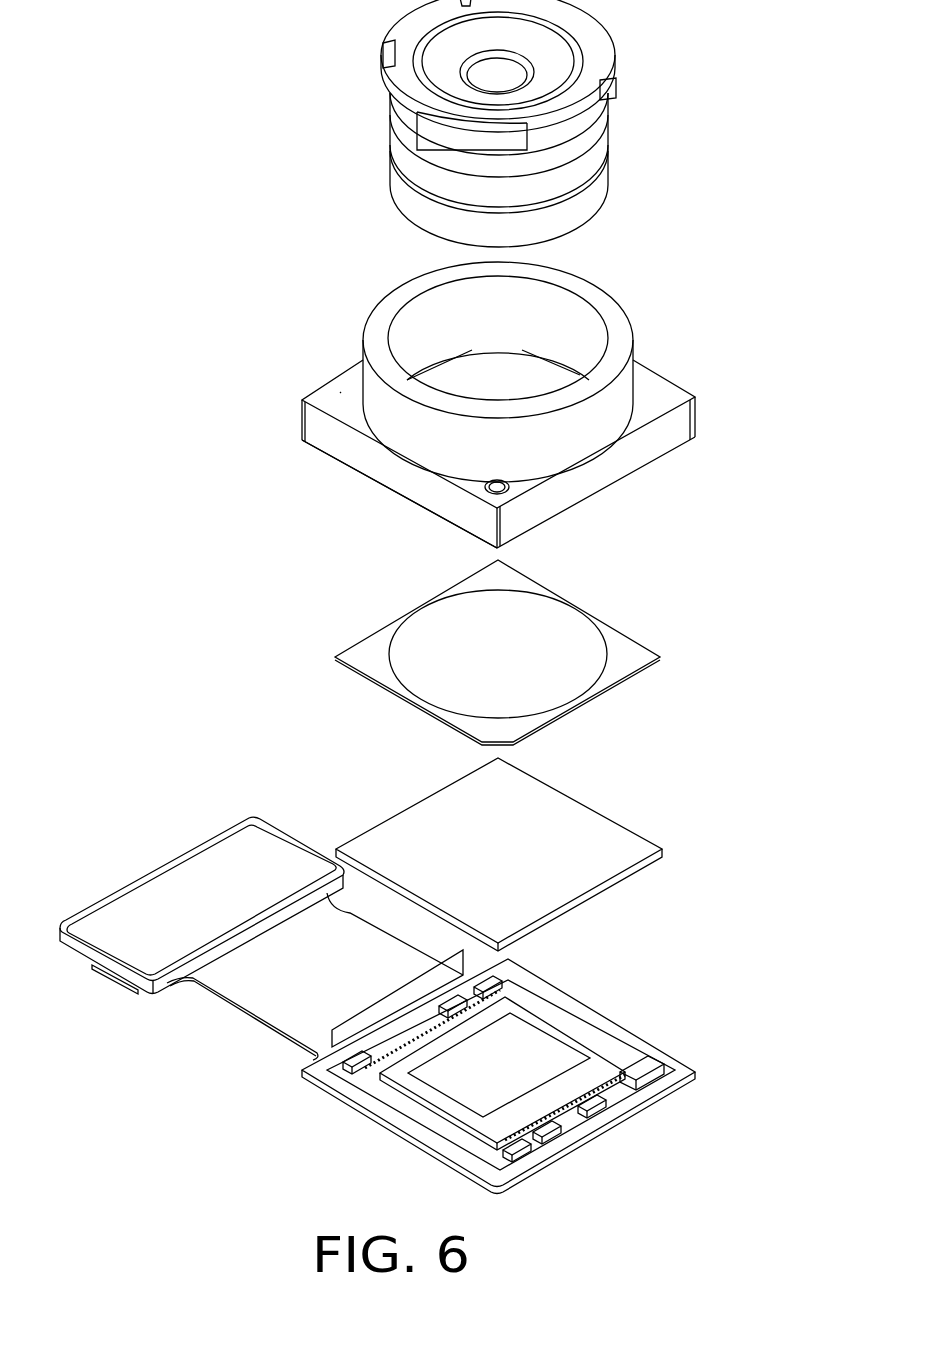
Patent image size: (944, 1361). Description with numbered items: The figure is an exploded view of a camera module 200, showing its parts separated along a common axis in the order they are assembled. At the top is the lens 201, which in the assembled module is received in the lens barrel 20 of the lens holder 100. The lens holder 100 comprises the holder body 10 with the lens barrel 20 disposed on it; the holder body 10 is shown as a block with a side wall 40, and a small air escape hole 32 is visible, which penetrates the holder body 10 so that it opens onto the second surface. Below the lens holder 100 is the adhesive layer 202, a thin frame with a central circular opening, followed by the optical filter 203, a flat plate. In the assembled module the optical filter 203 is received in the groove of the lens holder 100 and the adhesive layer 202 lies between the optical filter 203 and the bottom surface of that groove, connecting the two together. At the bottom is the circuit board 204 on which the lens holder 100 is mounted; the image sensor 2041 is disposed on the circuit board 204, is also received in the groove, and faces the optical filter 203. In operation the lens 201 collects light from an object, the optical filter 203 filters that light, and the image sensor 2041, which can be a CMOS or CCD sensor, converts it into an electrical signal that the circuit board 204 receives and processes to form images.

The camera module 200 is at (172, 42).
The lens holder 100 is at (348, 283).
The lens 201 is at (585, 148).
The lens barrel 20 is at (610, 310).
The holder body 10 is at (340, 392).
The side wall 40 is at (368, 455).
The air escape hole 32 is at (507, 490).
The adhesive layer 202 is at (630, 652).
The optical filter 203 is at (595, 830).
The circuit board 204 is at (400, 1120).
The image sensor 2041 is at (530, 1050).